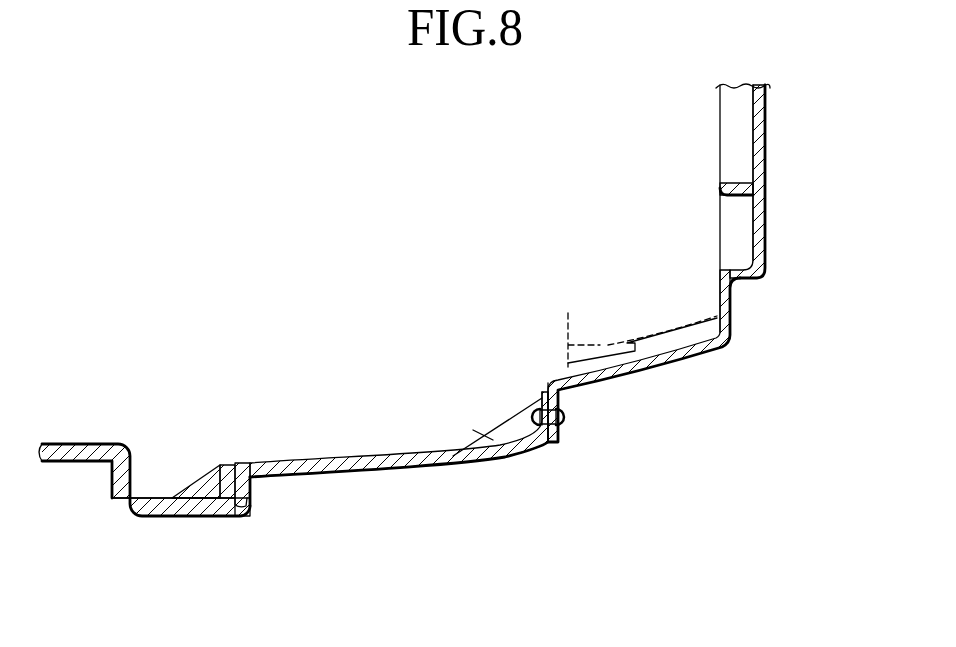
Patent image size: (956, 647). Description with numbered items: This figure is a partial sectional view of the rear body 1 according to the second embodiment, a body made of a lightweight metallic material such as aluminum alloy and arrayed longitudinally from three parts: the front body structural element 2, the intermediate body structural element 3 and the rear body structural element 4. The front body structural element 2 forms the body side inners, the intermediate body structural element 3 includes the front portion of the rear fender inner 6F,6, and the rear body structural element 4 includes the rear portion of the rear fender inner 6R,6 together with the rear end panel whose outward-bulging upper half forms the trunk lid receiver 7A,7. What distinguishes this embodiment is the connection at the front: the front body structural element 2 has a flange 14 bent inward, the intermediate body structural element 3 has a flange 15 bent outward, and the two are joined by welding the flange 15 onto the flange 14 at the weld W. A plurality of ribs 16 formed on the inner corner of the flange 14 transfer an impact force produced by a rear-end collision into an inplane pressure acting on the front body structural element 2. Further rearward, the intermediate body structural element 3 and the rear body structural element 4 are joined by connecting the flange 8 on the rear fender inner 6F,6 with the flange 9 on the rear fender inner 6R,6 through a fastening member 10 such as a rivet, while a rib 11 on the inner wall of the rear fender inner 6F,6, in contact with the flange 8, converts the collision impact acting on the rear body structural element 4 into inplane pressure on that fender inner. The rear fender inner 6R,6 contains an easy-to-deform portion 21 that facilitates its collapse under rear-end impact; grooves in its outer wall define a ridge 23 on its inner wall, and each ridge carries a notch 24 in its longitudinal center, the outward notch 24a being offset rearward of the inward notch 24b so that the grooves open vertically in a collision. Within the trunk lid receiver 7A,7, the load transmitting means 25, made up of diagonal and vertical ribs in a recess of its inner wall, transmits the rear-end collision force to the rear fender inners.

The rear body 1 is at (130, 517).
The front body structural element 2 is at (184, 517).
The intermediate body structural element 3 is at (399, 486).
The rear body structural element 4 is at (793, 208).
The front portion of rear fender inner 6F,6 is at (428, 470).
The rear portion of rear fender inner 6R,6 is at (710, 352).
The trunk lid receiver of rear end panel 7A,7 is at (768, 136).
The flange 8 is at (547, 383).
The flange 9 is at (553, 444).
The fastening member 10 is at (569, 418).
The rib 11 is at (498, 427).
The flange 14 is at (229, 466).
The flange 15 is at (251, 478).
The rib 16 is at (194, 490).
The easy-to-deform portion 21 is at (632, 374).
The ridge 23 is at (594, 351).
The notch 24 is at (642, 281).
The outward notch 24a is at (630, 345).
The inward notch 24b is at (700, 253).
The load transmitting means 25 is at (737, 186).
The weld W is at (249, 509).